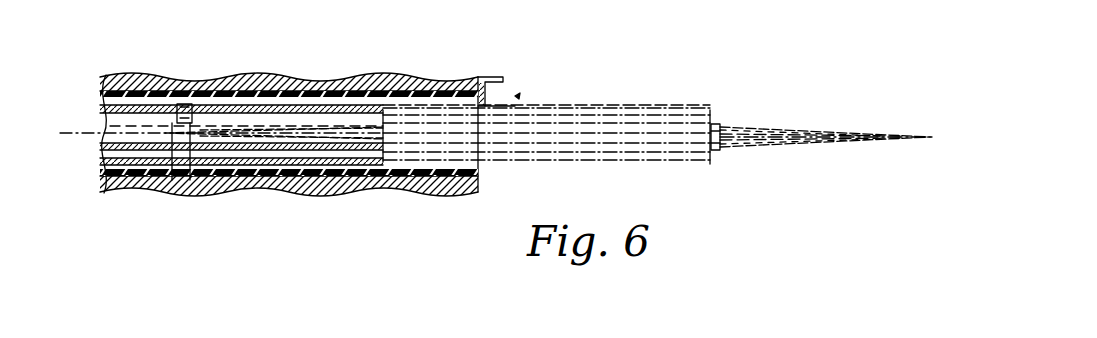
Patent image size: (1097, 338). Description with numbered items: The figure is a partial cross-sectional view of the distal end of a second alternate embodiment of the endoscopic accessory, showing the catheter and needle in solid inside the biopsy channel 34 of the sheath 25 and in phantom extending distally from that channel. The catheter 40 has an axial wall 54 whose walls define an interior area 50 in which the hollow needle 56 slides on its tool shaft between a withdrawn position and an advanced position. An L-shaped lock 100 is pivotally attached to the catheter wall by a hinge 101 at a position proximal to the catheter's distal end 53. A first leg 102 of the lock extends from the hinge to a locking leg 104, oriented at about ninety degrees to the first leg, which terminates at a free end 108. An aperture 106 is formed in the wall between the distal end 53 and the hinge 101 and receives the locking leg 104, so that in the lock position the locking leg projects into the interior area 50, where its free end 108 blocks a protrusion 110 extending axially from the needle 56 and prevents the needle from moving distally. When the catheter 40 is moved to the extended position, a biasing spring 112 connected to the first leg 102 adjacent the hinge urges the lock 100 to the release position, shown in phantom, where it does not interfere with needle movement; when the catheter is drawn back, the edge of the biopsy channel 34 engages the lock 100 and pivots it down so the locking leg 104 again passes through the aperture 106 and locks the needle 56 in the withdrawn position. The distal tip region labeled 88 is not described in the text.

The sheath 25 is at (370, 77).
The biopsy channel 34 is at (452, 193).
The catheter 40 is at (108, 194).
The interior area 50 is at (312, 176).
The distal end of the catheter 53 is at (378, 176).
The axial wall 54 is at (99, 77).
The hollow needle 56 is at (340, 176).
The tapered distal tip 88 is at (930, 135).
The L-shaped lock 100 is at (213, 83).
The hinge 101 is at (140, 110).
The first leg 102 is at (168, 110).
The locking leg 104 is at (282, 176).
The aperture 106 is at (273, 77).
The free end 108 is at (503, 78).
The protrusion 110 is at (482, 75).
The biasing spring 112 is at (515, 97).